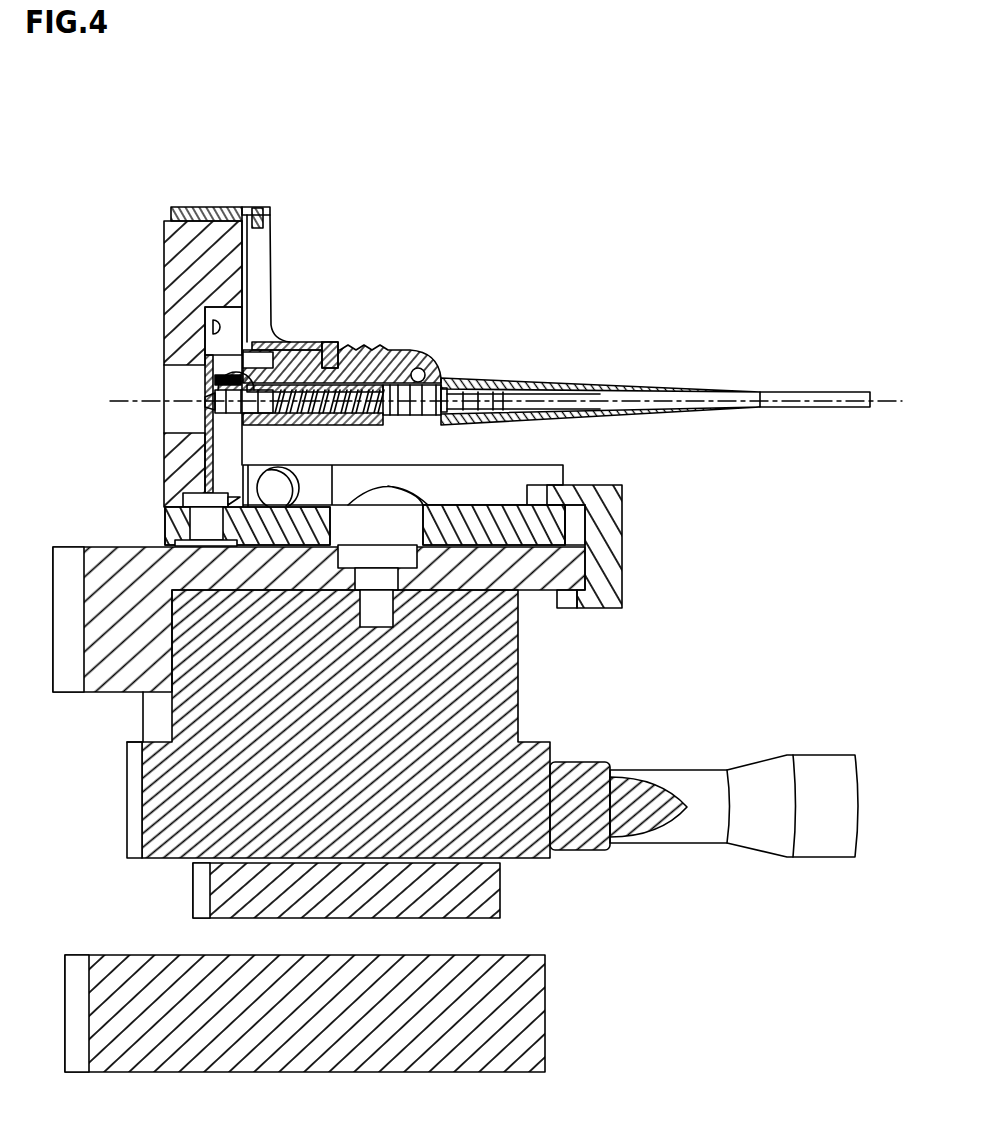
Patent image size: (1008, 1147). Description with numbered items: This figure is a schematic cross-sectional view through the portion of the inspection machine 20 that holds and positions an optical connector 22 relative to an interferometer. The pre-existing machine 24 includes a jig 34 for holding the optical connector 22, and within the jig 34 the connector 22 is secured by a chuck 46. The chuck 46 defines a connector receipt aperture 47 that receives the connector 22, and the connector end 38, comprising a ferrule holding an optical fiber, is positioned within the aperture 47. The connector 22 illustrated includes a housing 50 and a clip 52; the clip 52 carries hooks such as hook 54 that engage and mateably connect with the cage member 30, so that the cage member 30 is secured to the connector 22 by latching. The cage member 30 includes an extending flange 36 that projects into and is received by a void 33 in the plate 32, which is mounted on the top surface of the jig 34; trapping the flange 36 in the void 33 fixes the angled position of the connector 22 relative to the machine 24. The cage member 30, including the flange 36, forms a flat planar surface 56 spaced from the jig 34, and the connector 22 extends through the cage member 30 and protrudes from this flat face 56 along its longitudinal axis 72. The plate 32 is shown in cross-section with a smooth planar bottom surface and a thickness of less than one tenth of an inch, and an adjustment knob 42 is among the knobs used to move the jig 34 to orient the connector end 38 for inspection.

The inspection machine 20 is at (112, 211).
The optical connector 22 is at (472, 334).
The machine 24 is at (448, 226).
The cage member 30 is at (298, 341).
The plate 32 is at (212, 207).
The void 33 is at (266, 213).
The jig 34 is at (163, 269).
The extending flange 36 is at (268, 257).
The connector end 38 is at (204, 397).
The adjustment knob 42 is at (818, 754).
The chuck 46 is at (204, 424).
The connector receipt aperture 47 is at (204, 405).
The housing 50 is at (358, 419).
The clip 52 is at (388, 352).
The hook 54 is at (330, 343).
The flat planar surface 56 is at (252, 282).
The longitudinal axis 72 is at (882, 398).